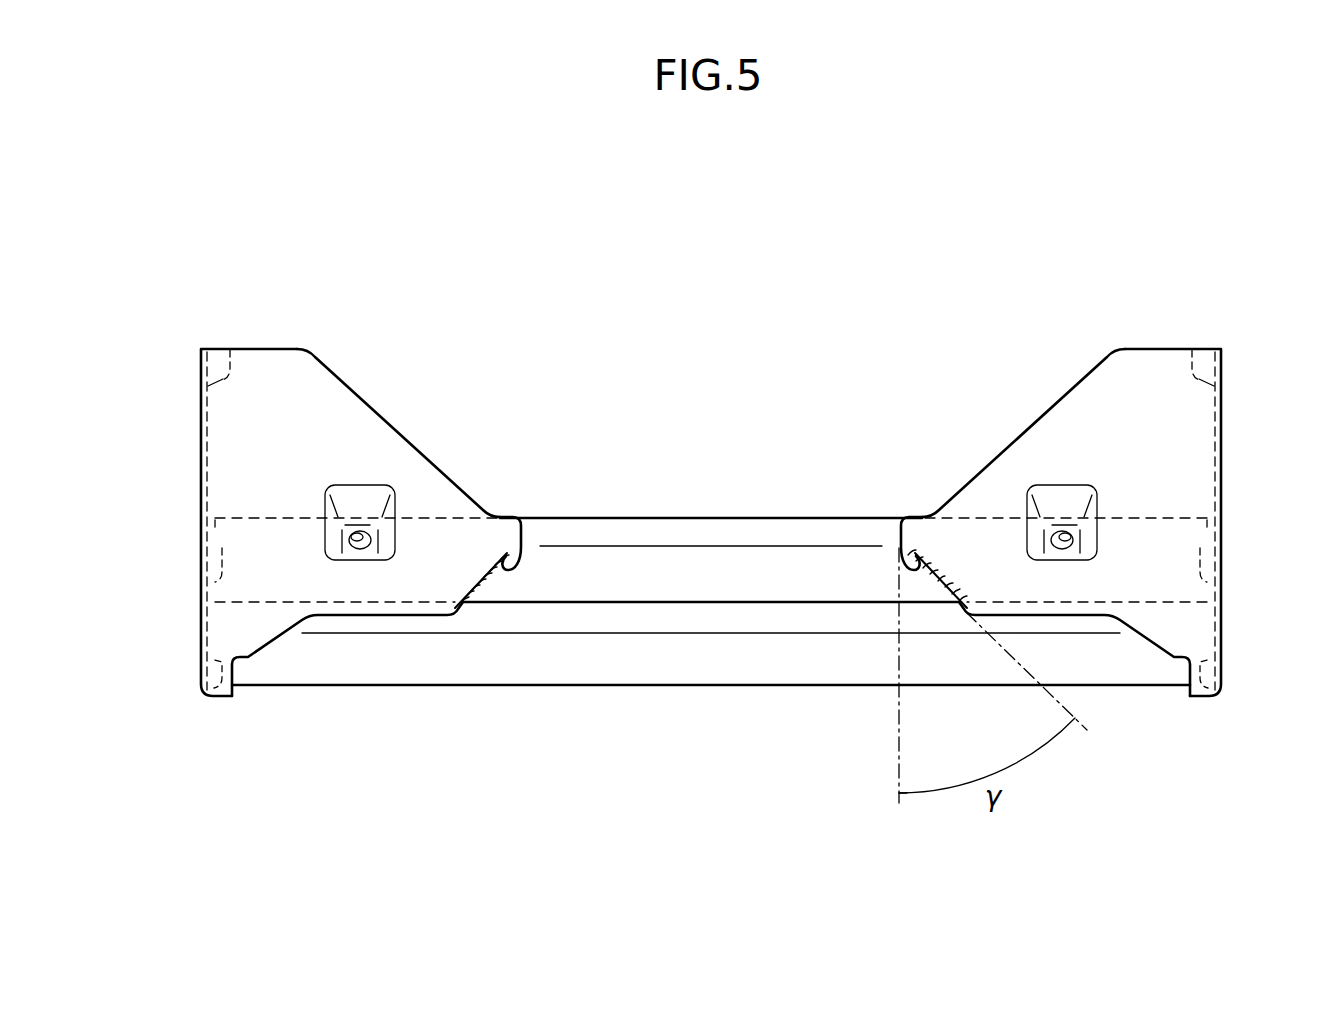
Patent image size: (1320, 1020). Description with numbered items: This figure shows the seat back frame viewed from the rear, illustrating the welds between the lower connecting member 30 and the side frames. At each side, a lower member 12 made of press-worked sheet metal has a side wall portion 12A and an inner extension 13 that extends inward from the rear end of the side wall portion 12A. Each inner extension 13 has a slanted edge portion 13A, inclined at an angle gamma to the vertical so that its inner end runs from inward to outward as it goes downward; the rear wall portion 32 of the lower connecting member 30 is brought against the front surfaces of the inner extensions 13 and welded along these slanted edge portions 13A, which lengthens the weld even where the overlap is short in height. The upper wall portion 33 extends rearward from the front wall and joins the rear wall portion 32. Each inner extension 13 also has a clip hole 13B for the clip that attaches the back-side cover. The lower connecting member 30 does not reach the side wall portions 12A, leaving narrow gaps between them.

The lower member 12 is at (200, 417).
The side wall portion 12A is at (232, 338).
The inner extension 13 is at (343, 418).
The slanted edge portion 13A is at (509, 570).
The clip hole 13B is at (377, 528).
The lower connecting member 30 is at (714, 517).
The rear wall portion 32 is at (700, 578).
The upper wall portion 33 is at (628, 528).